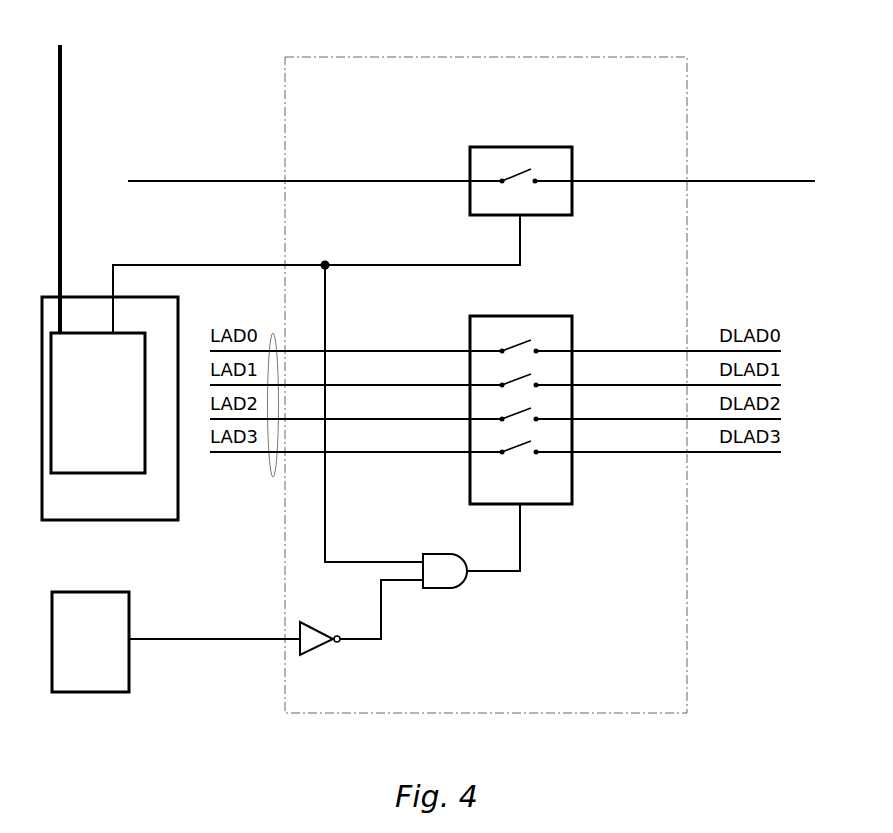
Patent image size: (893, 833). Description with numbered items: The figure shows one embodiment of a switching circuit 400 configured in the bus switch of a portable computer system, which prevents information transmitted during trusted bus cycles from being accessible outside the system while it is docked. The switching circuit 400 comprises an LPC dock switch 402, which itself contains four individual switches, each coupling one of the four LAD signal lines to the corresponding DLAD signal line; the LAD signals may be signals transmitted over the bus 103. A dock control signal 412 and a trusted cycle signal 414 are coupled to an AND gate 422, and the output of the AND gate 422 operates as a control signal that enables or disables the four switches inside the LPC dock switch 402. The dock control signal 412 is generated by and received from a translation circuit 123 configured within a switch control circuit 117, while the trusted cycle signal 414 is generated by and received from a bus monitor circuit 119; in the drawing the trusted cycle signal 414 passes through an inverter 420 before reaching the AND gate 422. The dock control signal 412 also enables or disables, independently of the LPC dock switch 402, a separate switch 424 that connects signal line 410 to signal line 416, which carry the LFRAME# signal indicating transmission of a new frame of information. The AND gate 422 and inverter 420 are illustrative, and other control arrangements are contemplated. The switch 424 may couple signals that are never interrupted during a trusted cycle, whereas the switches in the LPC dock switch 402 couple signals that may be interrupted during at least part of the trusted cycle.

The bus 103 is at (63, 126).
The switch control circuit 117 is at (170, 513).
The translation circuit 123 is at (137, 469).
The bus monitor circuit 119 is at (123, 689).
The switching circuit 400 is at (681, 706).
The LPC dock switch 402 is at (568, 497).
The signal line 410 is at (247, 180).
The dock control signal 412 is at (247, 264).
The trusted cycle signal 414 is at (265, 642).
The signal line 416 is at (696, 183).
The inverter 420 is at (325, 648).
The AND gate 422 is at (440, 590).
The switch 424 is at (533, 147).